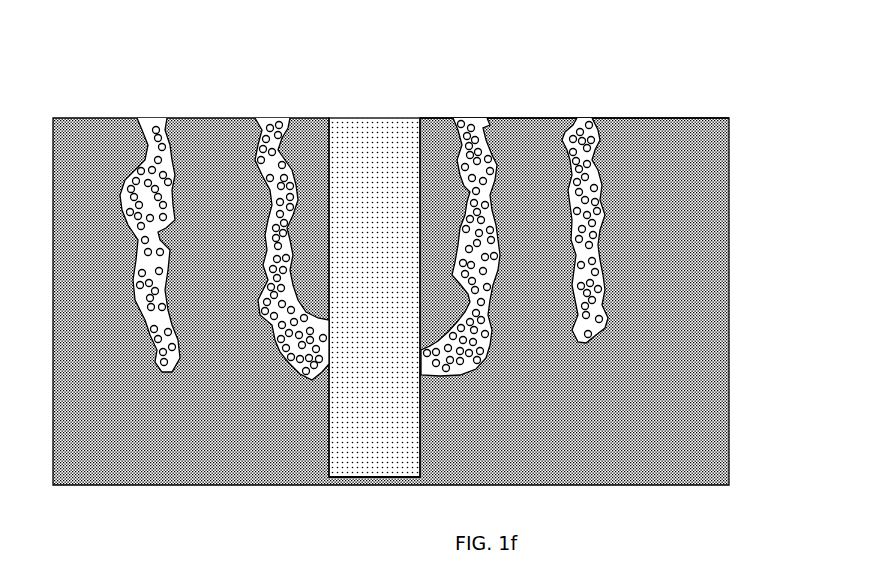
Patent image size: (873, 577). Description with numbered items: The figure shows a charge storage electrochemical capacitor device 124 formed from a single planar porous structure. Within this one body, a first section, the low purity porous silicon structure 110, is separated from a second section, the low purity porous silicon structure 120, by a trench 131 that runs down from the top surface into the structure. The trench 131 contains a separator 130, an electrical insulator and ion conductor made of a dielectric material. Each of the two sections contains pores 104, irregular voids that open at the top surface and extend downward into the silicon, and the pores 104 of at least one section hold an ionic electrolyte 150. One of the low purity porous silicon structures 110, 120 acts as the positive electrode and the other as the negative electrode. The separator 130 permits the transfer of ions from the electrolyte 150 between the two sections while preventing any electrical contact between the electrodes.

The pores 104 is at (150, 110).
The first low purity porous silicon structure 110 is at (98, 450).
The second low purity porous silicon structure 120 is at (682, 460).
The charge storage electrochemical capacitor device 124 is at (748, 108).
The separator 130 is at (375, 150).
The trench 131 is at (382, 478).
The electrolyte 150 is at (580, 118).